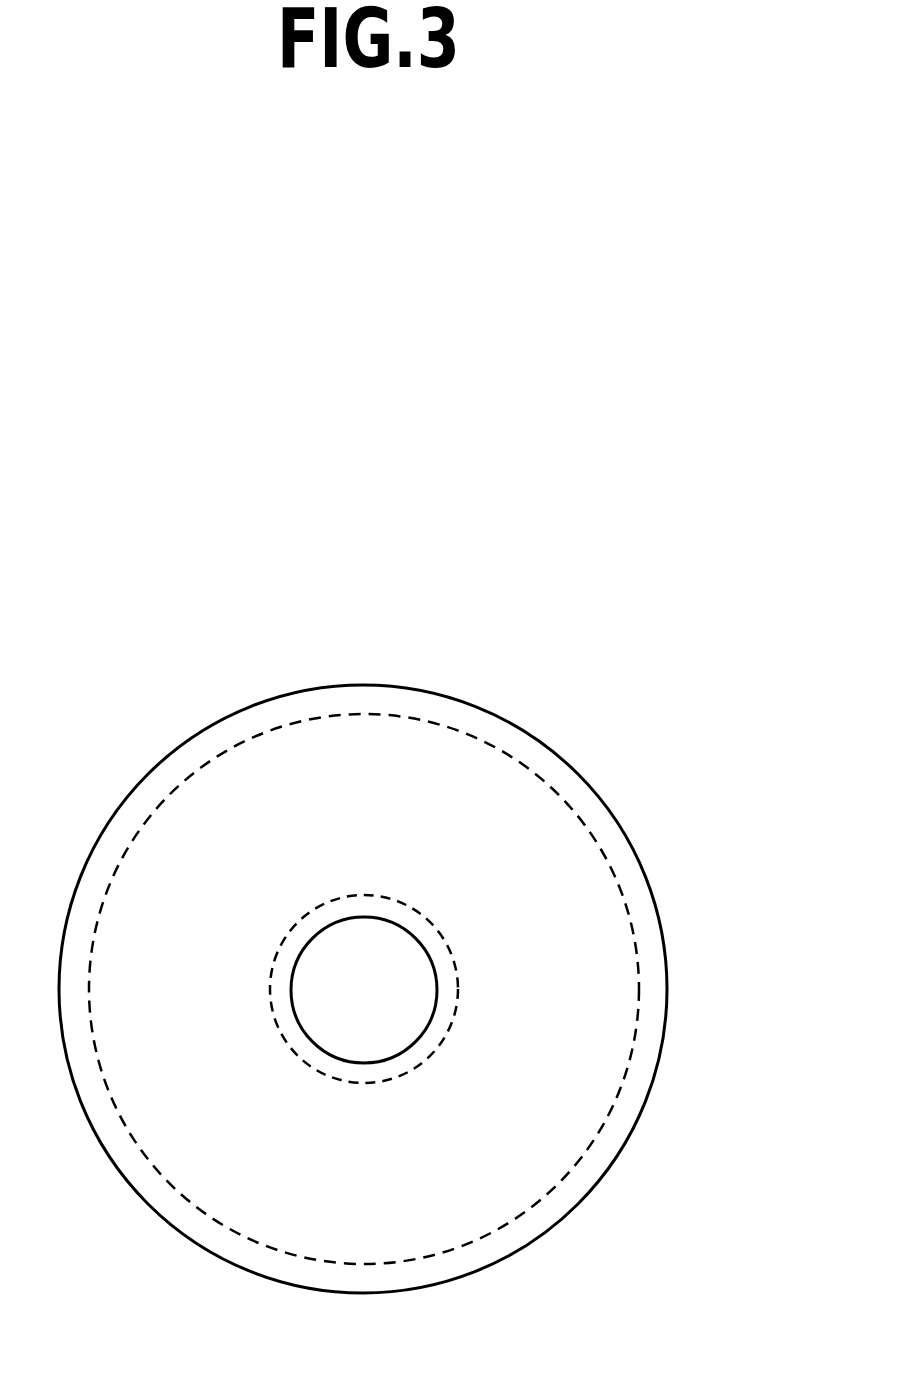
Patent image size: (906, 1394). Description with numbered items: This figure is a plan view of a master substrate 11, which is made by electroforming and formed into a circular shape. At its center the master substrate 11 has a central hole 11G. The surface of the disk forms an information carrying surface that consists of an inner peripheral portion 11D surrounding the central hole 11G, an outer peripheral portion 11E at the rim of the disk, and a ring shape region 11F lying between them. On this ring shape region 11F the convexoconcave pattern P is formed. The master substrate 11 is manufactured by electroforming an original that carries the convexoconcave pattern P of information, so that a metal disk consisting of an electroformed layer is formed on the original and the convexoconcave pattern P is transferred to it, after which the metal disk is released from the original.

The master substrate 11 is at (588, 780).
The outer peripheral portion 11E is at (643, 893).
The inner peripheral portion 11D is at (424, 926).
The central hole 11G is at (316, 1037).
The ring shape region 11F is at (505, 1173).
The convexoconcave pattern P is at (550, 980).